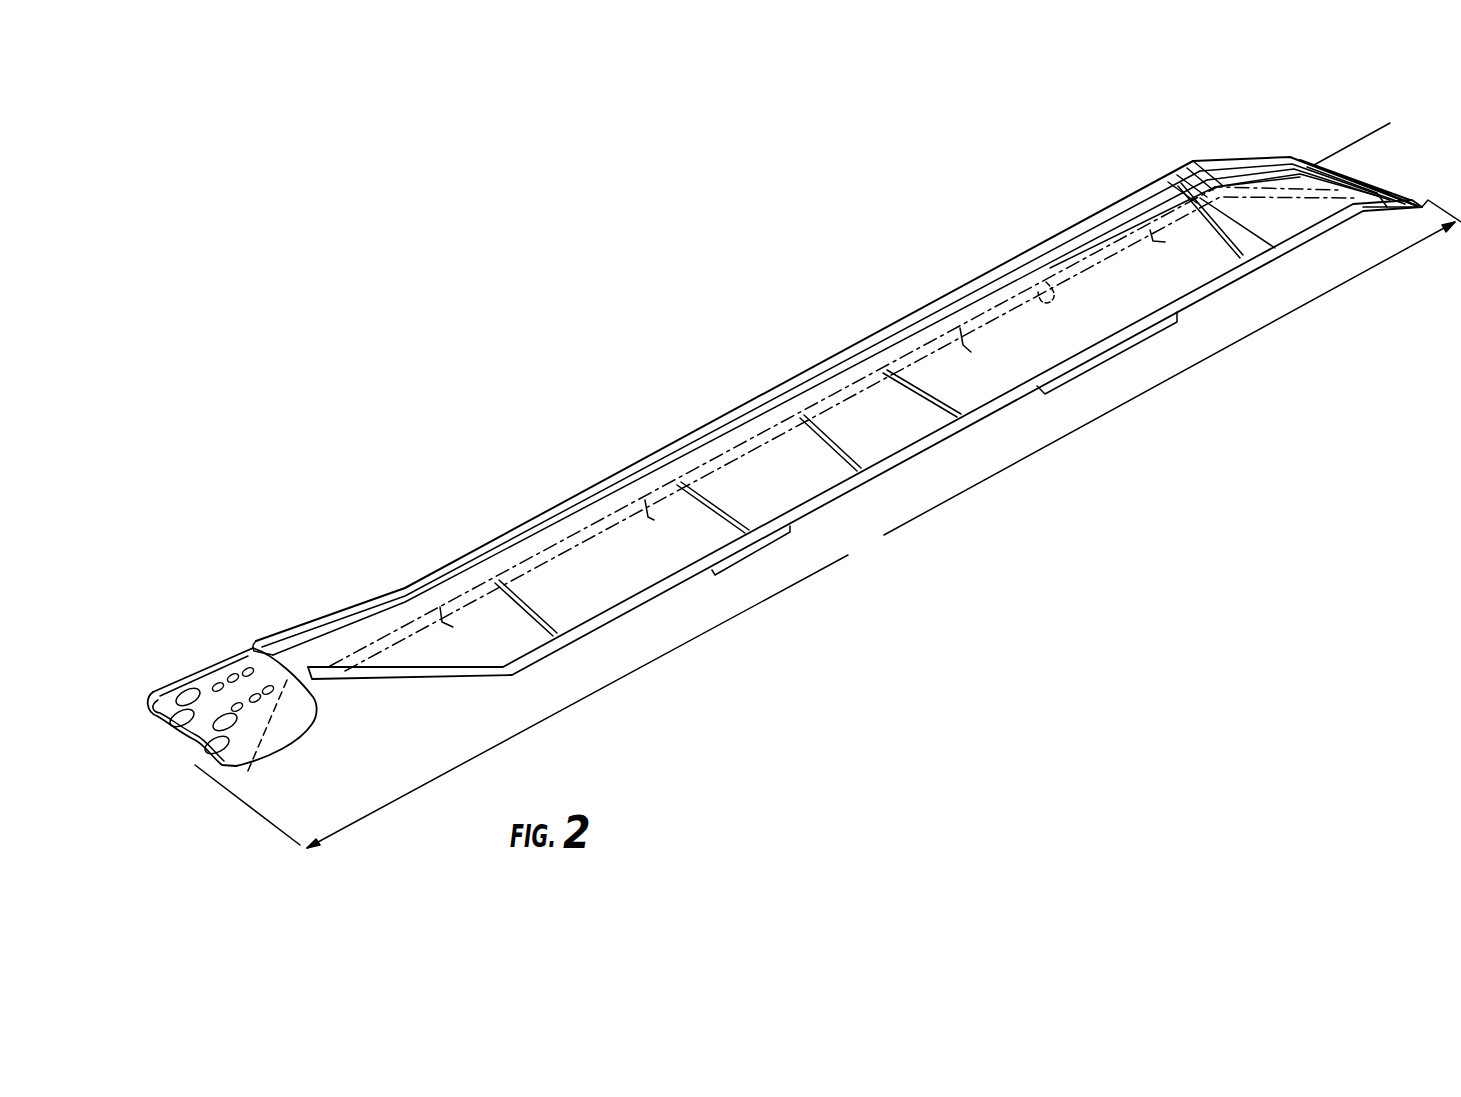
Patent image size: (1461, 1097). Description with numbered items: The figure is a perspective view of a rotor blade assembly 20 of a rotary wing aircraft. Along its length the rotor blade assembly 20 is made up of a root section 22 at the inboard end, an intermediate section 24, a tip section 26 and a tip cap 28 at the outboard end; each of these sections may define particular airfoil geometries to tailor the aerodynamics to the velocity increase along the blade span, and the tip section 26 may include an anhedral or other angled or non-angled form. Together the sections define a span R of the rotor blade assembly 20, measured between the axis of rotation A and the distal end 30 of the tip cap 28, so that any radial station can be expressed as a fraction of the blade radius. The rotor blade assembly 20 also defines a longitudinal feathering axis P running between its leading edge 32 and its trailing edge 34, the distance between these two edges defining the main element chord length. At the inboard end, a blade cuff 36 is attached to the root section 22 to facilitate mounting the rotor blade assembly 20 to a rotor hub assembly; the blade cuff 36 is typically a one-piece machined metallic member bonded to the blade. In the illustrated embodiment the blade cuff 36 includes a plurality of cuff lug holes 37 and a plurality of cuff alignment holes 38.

The rotor blade assembly 20 is at (779, 458).
The root section 22 is at (219, 701).
The intermediate section 24 is at (837, 420).
The tip section 26 is at (1273, 145).
The tip cap 28 is at (1372, 165).
The distal end 30 is at (1398, 195).
The leading edge 32 is at (866, 328).
The trailing edge 34 is at (918, 443).
The blade cuff 36 is at (250, 728).
The cuff lug holes 37 is at (213, 725).
The cuff alignment holes 38 is at (248, 669).
The longitudinal feathering axis P is at (1345, 148).
The axis of rotation A is at (283, 707).
The span R is at (683, 277).